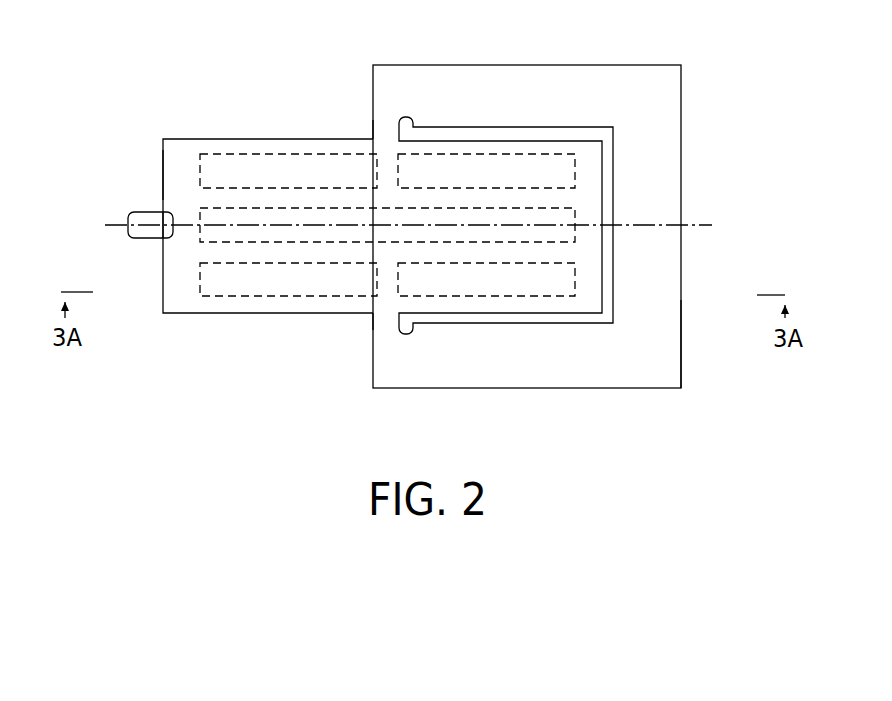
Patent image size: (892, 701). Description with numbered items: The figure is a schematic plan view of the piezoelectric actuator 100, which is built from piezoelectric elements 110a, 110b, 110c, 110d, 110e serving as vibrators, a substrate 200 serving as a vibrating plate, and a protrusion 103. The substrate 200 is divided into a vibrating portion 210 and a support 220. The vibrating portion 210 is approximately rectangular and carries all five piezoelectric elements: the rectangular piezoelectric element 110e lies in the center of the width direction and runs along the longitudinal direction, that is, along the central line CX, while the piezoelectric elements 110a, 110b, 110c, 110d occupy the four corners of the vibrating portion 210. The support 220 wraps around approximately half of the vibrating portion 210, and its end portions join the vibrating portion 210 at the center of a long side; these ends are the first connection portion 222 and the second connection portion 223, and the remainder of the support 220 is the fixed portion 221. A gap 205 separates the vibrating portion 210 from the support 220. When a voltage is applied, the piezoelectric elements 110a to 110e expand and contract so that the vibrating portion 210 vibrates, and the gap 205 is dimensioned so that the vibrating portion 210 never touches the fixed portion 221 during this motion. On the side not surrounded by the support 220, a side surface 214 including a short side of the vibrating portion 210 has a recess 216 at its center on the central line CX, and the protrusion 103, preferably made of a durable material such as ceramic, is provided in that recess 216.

The piezoelectric actuator 100 is at (143, 62).
The protrusion 103 is at (136, 212).
The piezoelectric element 110a is at (312, 185).
The piezoelectric element 110b is at (510, 185).
The piezoelectric element 110c is at (312, 293).
The piezoelectric element 110d is at (510, 293).
The piezoelectric element 110e is at (410, 242).
The substrate 200 is at (357, 55).
The gap 205 is at (606, 198).
The vibrating portion 210 is at (238, 139).
The side surface 214 is at (163, 163).
The recess 216 is at (160, 236).
The support 220 is at (380, 63).
The fixed portion 221 is at (666, 342).
The first connection portion 222 is at (373, 128).
The second connection portion 223 is at (384, 320).